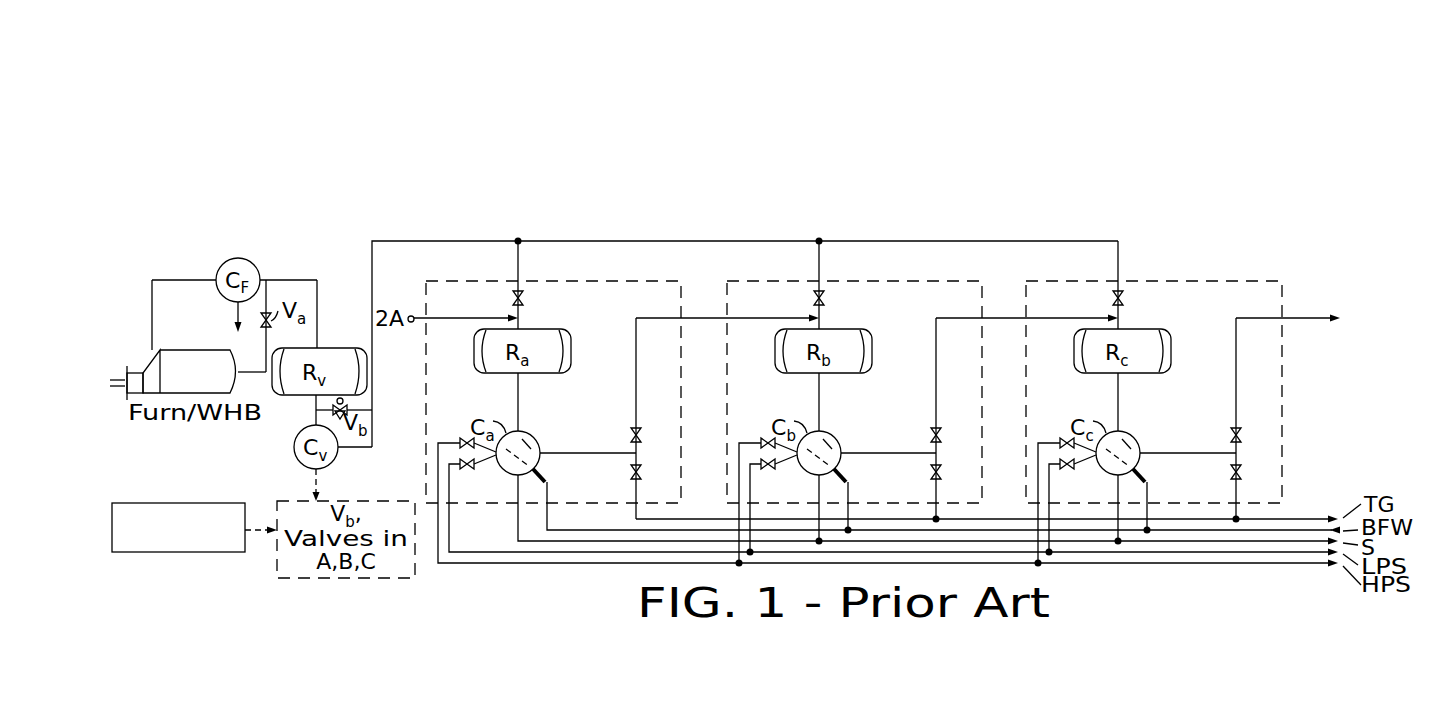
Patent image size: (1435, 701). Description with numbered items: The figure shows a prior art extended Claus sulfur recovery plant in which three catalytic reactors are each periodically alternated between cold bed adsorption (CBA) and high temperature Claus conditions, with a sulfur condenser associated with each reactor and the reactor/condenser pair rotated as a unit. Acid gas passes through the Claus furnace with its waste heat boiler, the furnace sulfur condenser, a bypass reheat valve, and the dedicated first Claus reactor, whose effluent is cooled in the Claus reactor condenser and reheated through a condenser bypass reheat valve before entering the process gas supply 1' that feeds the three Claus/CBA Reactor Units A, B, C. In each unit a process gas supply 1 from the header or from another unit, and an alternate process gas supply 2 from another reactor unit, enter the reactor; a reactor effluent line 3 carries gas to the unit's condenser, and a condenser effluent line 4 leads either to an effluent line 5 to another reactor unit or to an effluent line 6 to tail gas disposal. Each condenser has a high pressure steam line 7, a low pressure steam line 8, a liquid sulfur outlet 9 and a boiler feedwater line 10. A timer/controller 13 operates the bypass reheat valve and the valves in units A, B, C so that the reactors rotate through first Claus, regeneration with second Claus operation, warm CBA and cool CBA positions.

The process gas supply 1 is at (835, 285).
The process gas supply 1' is at (728, 343).
The alternate process gas supply 2 is at (452, 318).
The reactor effluent line 3 is at (519, 397).
The condenser effluent line 4 is at (551, 452).
The effluent line to another reactor unit 5 is at (636, 382).
The effluent line to tail gas disposal 6 is at (636, 503).
The high pressure steam line 7 is at (438, 441).
The low pressure steam line 8 is at (449, 493).
The liquid sulfur outlet 9 is at (518, 487).
The boiler feedwater line 10 is at (547, 497).
The timer/controller 13 is at (200, 503).
The Claus/CBA Reactor Unit A is at (641, 281).
The Claus/CBA Reactor Unit B is at (920, 281).
The Claus/CBA Reactor Unit C is at (1205, 281).